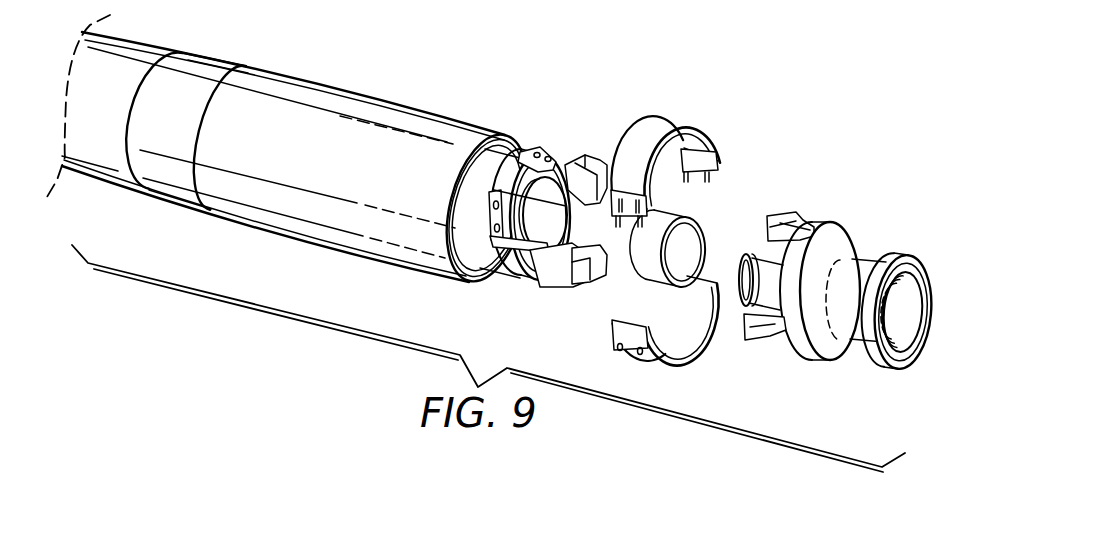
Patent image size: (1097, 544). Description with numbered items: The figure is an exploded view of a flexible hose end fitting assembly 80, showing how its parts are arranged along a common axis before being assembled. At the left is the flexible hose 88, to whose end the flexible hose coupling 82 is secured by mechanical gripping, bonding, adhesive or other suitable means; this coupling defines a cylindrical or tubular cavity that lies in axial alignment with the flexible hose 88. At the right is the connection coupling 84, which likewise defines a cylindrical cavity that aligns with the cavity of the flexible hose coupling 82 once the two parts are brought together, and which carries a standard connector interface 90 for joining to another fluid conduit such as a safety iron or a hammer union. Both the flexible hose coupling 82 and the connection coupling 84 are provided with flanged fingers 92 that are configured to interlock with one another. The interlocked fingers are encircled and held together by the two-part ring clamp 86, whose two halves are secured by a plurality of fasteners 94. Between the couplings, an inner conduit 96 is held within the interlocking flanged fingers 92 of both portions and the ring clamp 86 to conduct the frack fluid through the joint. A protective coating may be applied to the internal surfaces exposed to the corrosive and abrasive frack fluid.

The flexible hose end fitting assembly 80 is at (666, 38).
The flexible hose coupling 82 is at (327, 247).
The connection coupling 84 is at (850, 243).
The two-part ring clamp 86 is at (690, 357).
The flexible hose 88 is at (98, 182).
The standard connector interface 90 is at (897, 360).
The flanged fingers 92 is at (594, 163).
The fasteners 94 is at (608, 250).
The inner conduit 96 is at (700, 227).